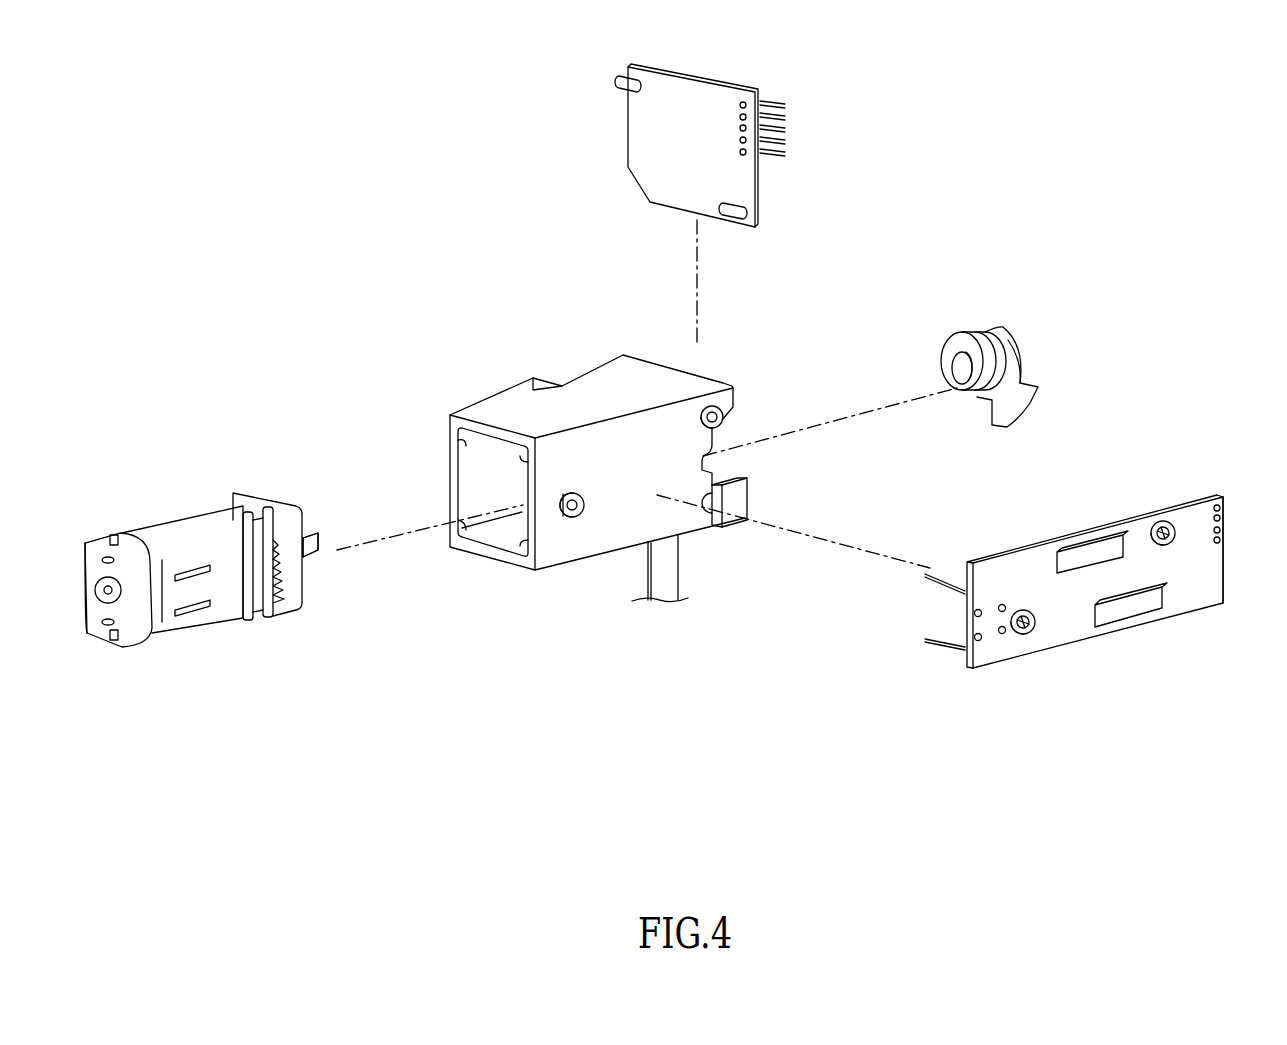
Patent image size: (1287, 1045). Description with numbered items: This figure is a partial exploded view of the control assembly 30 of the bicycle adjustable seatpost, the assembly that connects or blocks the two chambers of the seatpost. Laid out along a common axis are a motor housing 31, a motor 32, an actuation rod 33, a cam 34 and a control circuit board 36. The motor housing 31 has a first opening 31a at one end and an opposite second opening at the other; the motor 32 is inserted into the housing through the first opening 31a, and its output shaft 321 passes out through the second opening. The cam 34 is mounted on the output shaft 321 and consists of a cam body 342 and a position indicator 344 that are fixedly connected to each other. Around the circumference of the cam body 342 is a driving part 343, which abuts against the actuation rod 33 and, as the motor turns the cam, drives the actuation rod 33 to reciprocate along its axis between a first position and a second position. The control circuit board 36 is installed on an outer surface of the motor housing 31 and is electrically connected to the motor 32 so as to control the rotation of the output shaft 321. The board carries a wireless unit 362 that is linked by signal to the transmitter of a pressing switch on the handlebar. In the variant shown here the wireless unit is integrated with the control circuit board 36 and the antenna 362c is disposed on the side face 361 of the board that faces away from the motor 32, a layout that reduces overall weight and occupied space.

The control assembly 30 is at (382, 433).
The motor housing 31 is at (577, 362).
The first opening 31a is at (487, 562).
The motor 32 is at (152, 517).
The output shaft 321 is at (312, 555).
The actuation rod 33 is at (647, 583).
The cam 34 is at (1018, 232).
The cam body 342 is at (962, 330).
The driving part 343 is at (987, 367).
The position indicator 344 is at (993, 325).
The control circuit board 36 is at (1182, 500).
The side face 361 is at (1198, 563).
The wireless unit 362 is at (738, 82).
The antenna 362c is at (1133, 610).